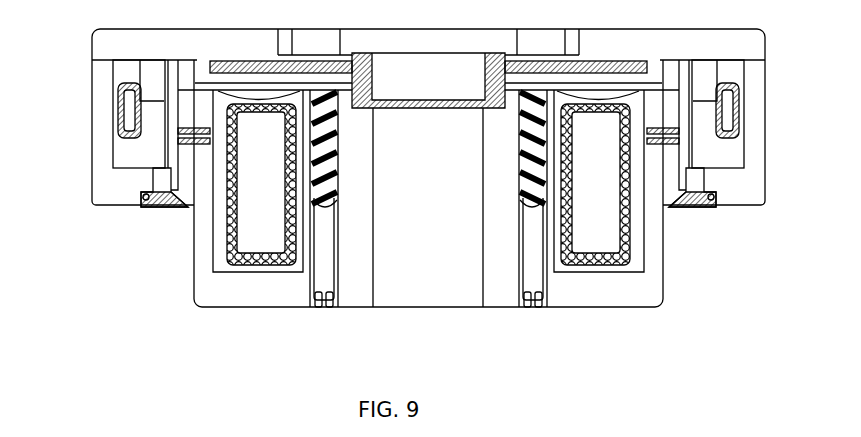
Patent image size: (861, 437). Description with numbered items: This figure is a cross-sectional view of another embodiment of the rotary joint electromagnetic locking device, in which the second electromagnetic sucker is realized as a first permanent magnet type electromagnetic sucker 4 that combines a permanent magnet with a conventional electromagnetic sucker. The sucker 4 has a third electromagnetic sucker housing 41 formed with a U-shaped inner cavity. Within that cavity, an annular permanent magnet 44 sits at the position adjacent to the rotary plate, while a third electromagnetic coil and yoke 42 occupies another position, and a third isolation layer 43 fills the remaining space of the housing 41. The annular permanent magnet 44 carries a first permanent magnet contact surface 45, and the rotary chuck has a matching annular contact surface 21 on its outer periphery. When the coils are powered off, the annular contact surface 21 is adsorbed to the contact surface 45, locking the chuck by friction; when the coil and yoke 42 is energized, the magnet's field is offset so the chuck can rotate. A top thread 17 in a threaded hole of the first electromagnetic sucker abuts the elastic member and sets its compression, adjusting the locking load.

The first permanent magnet type electromagnetic sucker 4 is at (100, 207).
The top thread 17 is at (537, 273).
The annular contact surface 21 is at (127, 57).
The third electromagnetic sucker housing 41 is at (727, 190).
The third electromagnetic coil and yoke 42 is at (728, 118).
The third isolation layer 43 is at (122, 148).
The annular permanent magnet 44 is at (703, 72).
The first permanent magnet contact surface 45 is at (140, 68).